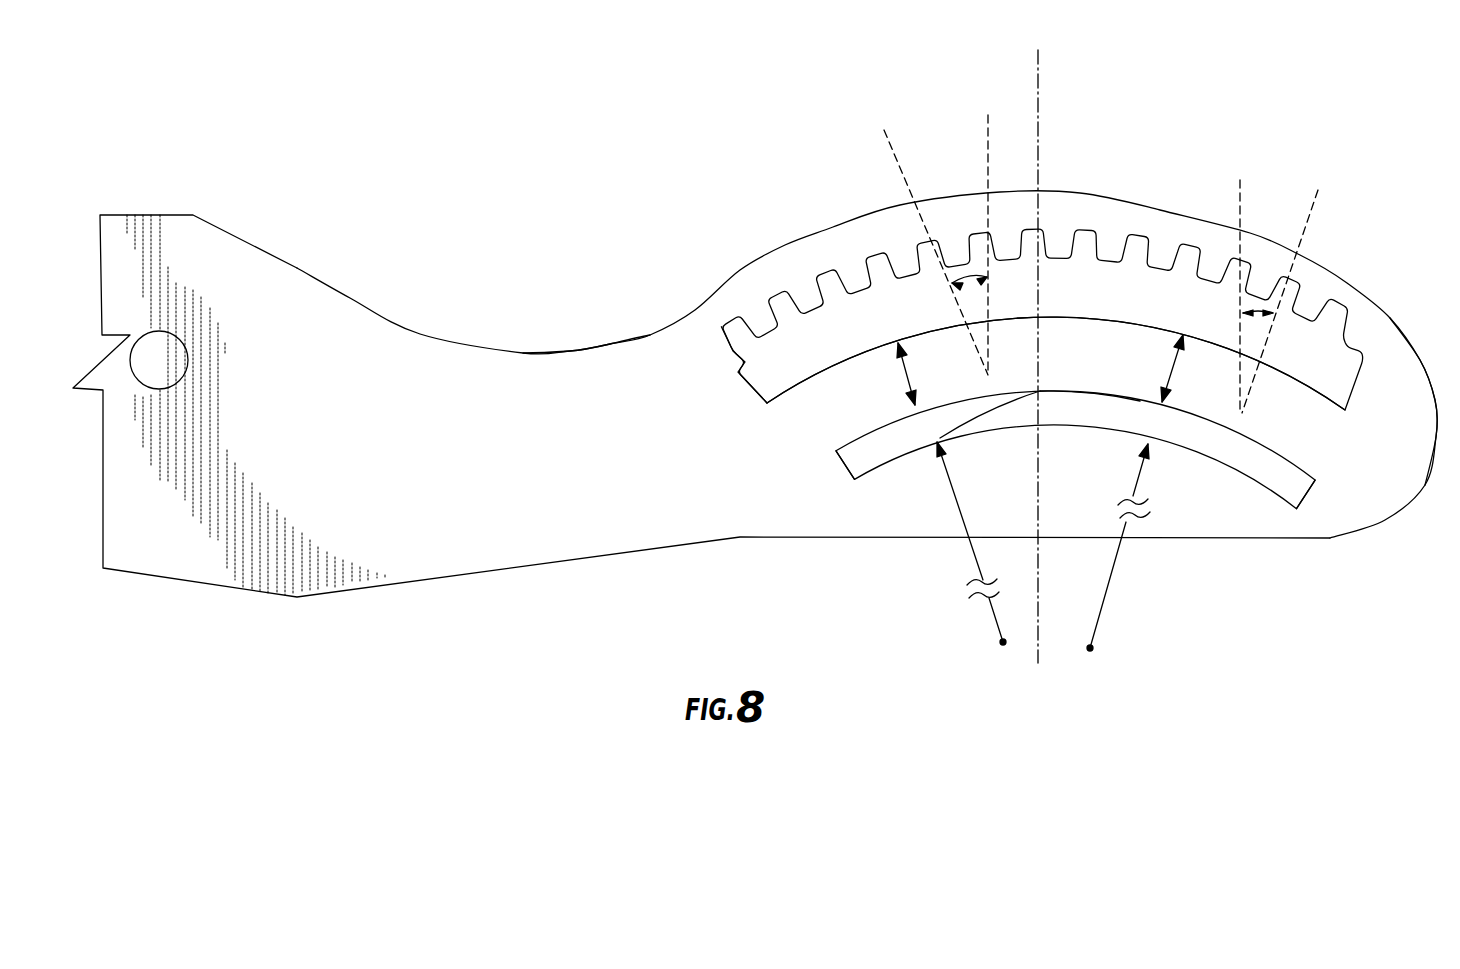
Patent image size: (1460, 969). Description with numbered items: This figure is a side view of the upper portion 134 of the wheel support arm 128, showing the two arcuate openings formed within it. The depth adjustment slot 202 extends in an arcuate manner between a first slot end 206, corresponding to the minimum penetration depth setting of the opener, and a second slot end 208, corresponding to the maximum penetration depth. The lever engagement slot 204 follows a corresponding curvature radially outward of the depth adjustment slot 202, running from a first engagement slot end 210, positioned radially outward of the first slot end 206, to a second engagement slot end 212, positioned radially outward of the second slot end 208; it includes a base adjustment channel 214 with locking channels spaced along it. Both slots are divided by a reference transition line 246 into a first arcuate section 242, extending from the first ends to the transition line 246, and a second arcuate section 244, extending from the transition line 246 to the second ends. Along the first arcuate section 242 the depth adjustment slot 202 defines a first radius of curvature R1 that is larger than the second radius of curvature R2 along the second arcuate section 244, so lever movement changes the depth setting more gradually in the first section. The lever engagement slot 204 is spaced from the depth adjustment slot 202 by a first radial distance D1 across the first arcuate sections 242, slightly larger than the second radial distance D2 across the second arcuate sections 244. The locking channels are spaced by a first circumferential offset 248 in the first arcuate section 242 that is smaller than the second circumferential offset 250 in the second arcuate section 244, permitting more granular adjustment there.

The wheel support arm 128 is at (329, 311).
The upper portion 134 is at (490, 380).
The lever engagement slot 204 is at (912, 321).
The second engagement slot end 212 is at (741, 386).
The base adjustment channel 214 is at (1075, 322).
The depth adjustment slot 202 is at (1226, 476).
The second slot end 208 is at (838, 454).
The first slot end 206 is at (1312, 508).
The second arcuate section 244 is at (987, 418).
The first arcuate section 242 is at (1084, 422).
The reference transition line 246 is at (1040, 95).
The second circumferential offset 250 is at (967, 262).
The first circumferential offset 248 is at (1258, 321).
The first engagement slot end 210 is at (1424, 372).
The first radial distance D1 is at (1170, 376).
The second radial distance D2 is at (907, 379).
The first radius of curvature R1 is at (1110, 587).
The second radius of curvature R2 is at (992, 613).